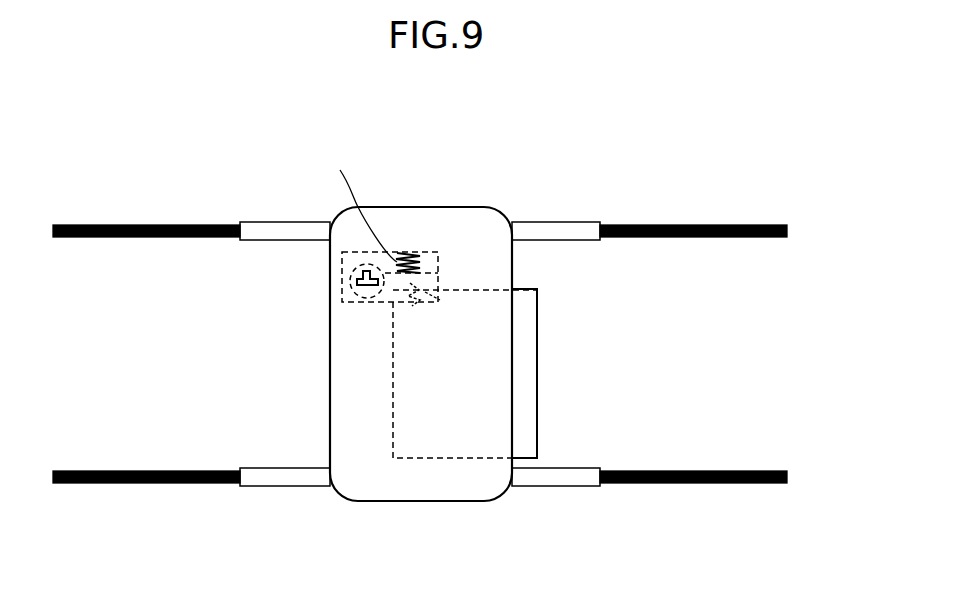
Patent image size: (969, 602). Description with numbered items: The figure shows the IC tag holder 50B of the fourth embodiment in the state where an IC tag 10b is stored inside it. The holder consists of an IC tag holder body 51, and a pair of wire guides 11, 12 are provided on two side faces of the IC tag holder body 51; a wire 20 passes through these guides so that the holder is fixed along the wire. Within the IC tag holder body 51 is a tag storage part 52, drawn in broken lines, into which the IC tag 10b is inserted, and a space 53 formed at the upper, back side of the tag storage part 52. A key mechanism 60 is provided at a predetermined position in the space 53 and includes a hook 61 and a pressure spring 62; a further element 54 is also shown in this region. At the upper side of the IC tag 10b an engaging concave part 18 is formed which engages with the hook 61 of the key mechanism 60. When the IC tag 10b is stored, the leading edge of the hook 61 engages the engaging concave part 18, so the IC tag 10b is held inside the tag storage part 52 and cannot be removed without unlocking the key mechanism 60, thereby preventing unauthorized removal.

The IC tag holder 50B is at (399, 206).
The IC tag holder body 51 is at (477, 222).
The tag storage part 52 is at (465, 452).
The space 53 is at (345, 262).
The engaging portion 54 is at (357, 282).
The key mechanism 60 is at (427, 272).
The hook 61 is at (395, 294).
The pressure spring 62 is at (340, 170).
The engaging concave part 18 is at (425, 292).
The IC tag 10b is at (525, 322).
The wire guide 11 is at (549, 222).
The wire guide 12 is at (258, 468).
The wire 20 is at (688, 224).